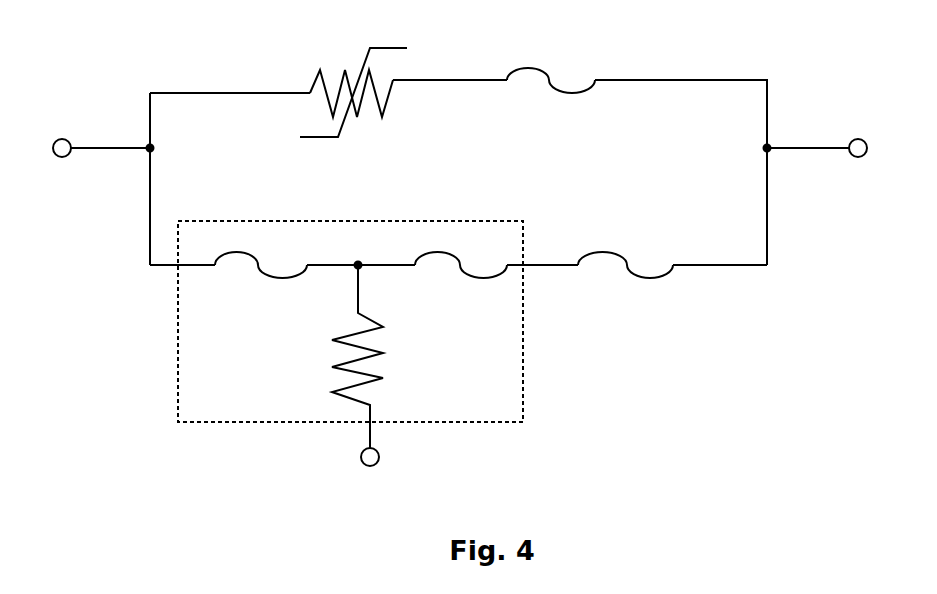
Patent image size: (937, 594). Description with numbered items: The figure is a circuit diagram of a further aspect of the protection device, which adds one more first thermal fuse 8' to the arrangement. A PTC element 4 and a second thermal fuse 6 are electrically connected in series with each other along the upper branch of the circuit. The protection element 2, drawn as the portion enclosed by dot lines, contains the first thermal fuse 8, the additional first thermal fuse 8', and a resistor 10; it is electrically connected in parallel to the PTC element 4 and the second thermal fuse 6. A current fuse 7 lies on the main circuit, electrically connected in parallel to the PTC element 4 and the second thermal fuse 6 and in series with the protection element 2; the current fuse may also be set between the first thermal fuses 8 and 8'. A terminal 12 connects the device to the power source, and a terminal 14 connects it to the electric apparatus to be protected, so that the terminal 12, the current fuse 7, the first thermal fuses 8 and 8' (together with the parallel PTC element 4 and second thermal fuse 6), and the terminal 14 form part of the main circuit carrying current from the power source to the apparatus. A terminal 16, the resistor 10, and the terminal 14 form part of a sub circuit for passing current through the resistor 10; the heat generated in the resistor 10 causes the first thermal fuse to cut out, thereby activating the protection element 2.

The protection element 2 is at (367, 325).
The PTC element 4 is at (353, 77).
The second thermal fuse 6 is at (551, 59).
The current fuse 7 is at (625, 280).
The first thermal fuse 8 is at (461, 280).
The first thermal fuse 8' is at (261, 280).
The resistor 10 is at (376, 356).
The terminal 12 is at (835, 148).
The terminal 14 is at (83, 148).
The terminal 16 is at (370, 472).